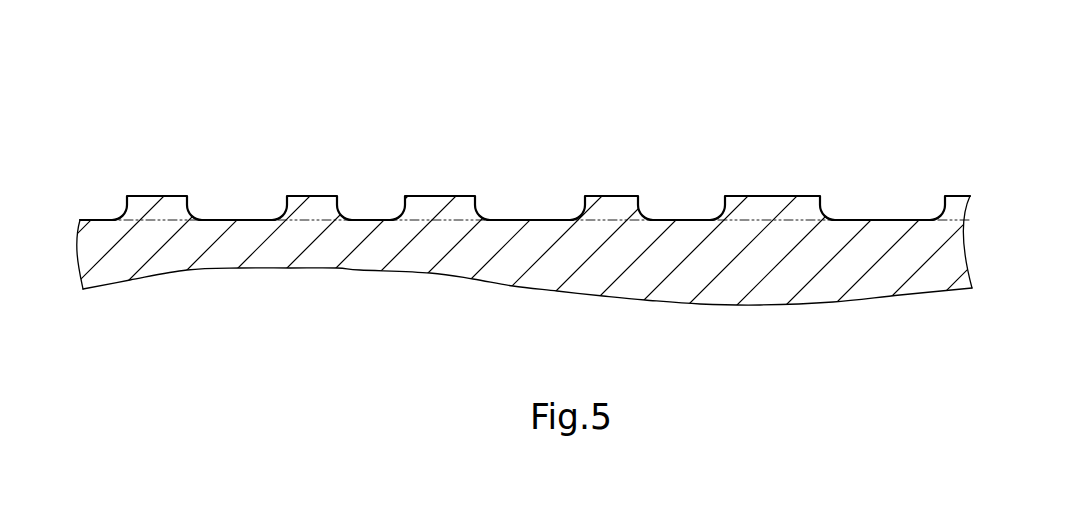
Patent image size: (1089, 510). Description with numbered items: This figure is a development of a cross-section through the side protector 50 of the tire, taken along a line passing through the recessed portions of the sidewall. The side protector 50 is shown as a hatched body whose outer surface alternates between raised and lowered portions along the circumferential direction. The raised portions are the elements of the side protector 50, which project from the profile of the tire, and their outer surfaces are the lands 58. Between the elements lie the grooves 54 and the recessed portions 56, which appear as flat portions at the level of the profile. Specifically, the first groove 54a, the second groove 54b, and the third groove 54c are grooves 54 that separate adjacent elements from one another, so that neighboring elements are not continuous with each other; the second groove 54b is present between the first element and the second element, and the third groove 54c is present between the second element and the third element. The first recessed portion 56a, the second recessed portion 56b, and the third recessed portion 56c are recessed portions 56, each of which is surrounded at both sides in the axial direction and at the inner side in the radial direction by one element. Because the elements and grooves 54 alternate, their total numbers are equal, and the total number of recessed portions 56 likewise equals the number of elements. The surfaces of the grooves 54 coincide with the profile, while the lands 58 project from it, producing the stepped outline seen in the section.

The side protector 50 is at (997, 160).
The grooves 54 is at (398, 146).
The first groove 54a is at (100, 220).
The second groove 54b is at (367, 220).
The third groove 54c is at (687, 220).
The recessed portions 56 is at (560, 146).
The first recessed portion 56a is at (240, 220).
The second recessed portion 56b is at (533, 220).
The third recessed portion 56c is at (878, 220).
The lands 58 is at (150, 196).